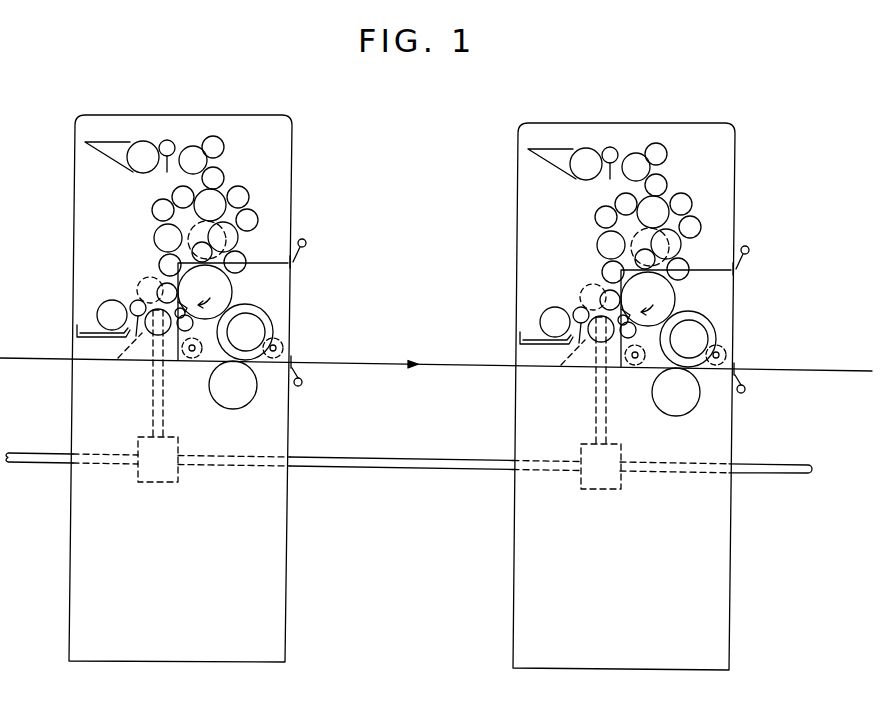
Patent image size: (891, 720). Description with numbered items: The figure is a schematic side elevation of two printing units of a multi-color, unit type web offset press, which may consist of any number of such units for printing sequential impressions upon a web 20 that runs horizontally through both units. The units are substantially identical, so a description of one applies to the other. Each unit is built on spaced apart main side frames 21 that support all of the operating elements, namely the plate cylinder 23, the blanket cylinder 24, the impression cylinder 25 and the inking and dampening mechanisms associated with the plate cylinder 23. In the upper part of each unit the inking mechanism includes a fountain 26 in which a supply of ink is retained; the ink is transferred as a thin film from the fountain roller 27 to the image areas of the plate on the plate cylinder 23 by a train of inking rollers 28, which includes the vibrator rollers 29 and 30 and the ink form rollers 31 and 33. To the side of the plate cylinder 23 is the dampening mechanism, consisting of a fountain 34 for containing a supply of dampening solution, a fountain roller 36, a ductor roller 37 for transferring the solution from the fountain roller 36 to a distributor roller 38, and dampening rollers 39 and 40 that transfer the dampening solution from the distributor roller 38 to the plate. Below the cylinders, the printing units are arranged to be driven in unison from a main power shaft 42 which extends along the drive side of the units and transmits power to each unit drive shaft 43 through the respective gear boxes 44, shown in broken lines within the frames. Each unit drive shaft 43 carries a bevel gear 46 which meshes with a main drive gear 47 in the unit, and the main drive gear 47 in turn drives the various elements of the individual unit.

The web 20 is at (382, 357).
The main side frame 21 is at (240, 135).
The plate cylinder 23 is at (230, 290).
The blanket cylinder 24 is at (271, 322).
The impression cylinder 25 is at (248, 392).
The fountain 26 is at (115, 147).
The fountain roller 27 is at (148, 143).
The train of inking rollers 28 is at (262, 187).
The vibrator roller 29 is at (160, 232).
The vibrator roller 30 is at (237, 240).
The ink form roller 31 is at (163, 262).
The ink form roller 33 is at (242, 258).
The fountain 34 is at (87, 327).
The fountain roller 36 is at (100, 306).
The ductor roller 37 is at (133, 306).
The distributor roller 38 is at (150, 333).
The dampening roller 39 is at (160, 290).
The dampening roller 40 is at (185, 331).
The main power shaft 42 is at (405, 467).
The unit drive shaft 43 is at (150, 415).
The gear box 44 is at (140, 484).
The bevel gear 46 is at (113, 362).
The main drive gear 47 is at (148, 272).